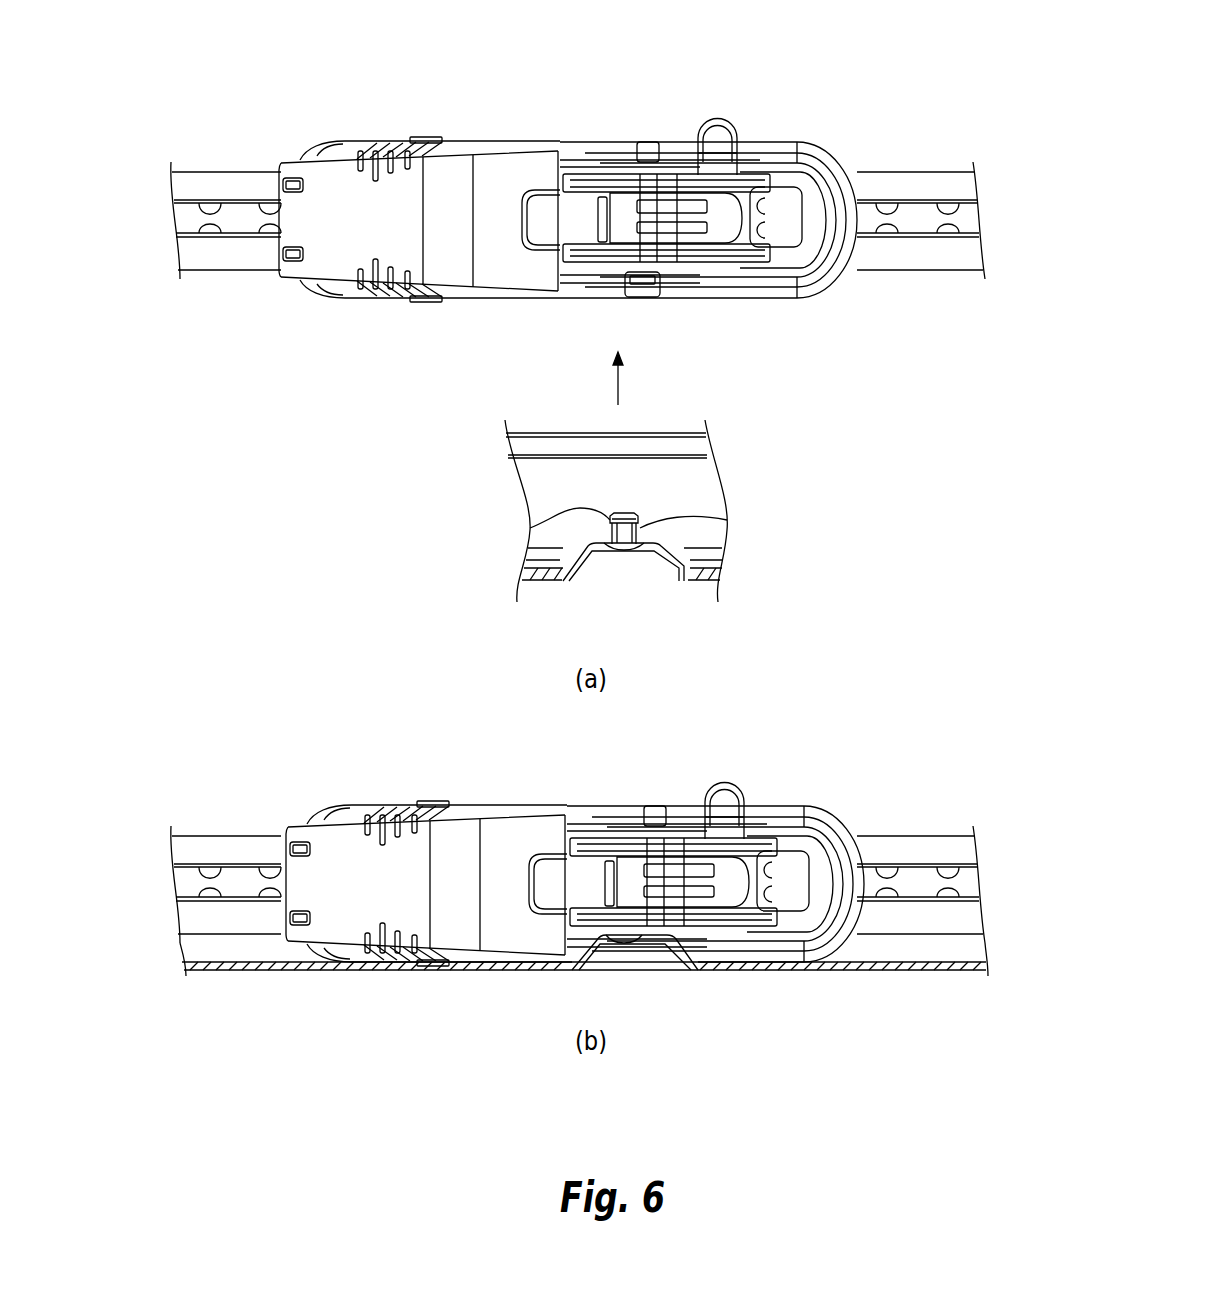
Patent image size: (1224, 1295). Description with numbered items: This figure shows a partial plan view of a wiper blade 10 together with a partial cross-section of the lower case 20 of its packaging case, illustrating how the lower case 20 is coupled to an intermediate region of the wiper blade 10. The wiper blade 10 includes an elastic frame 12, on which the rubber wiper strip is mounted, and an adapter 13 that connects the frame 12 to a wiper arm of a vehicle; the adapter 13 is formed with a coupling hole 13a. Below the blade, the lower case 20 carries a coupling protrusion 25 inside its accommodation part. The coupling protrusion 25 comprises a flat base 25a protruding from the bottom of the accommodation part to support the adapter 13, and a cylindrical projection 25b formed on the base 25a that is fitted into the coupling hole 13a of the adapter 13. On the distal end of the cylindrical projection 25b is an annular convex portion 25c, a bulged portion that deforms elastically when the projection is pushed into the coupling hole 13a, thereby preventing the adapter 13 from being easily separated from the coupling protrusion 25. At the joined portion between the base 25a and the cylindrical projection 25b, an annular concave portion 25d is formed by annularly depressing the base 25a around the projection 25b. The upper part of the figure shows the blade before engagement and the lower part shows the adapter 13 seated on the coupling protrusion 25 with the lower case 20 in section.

The wiper blade 10 is at (578, 180).
The frame 12 is at (907, 177).
The adapter 13 is at (504, 171).
The coupling hole 13a is at (612, 251).
The lower case 20 is at (594, 506).
The coupling protrusion 25 is at (620, 551).
The flat base 25a is at (700, 557).
The cylindrical projection 25b is at (643, 532).
The annular convex portion 25c is at (530, 528).
The annular concave portion 25d is at (600, 553).